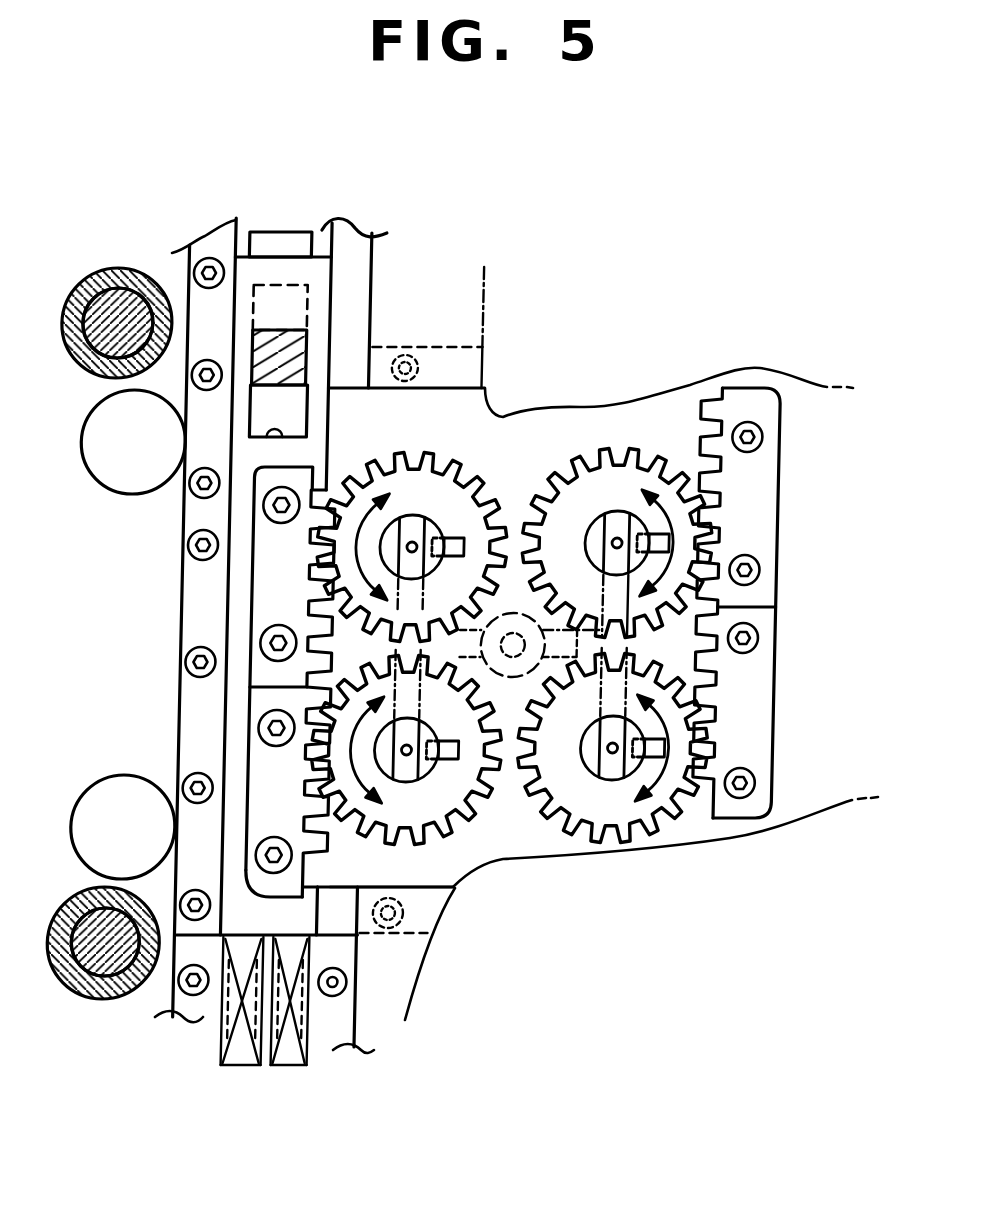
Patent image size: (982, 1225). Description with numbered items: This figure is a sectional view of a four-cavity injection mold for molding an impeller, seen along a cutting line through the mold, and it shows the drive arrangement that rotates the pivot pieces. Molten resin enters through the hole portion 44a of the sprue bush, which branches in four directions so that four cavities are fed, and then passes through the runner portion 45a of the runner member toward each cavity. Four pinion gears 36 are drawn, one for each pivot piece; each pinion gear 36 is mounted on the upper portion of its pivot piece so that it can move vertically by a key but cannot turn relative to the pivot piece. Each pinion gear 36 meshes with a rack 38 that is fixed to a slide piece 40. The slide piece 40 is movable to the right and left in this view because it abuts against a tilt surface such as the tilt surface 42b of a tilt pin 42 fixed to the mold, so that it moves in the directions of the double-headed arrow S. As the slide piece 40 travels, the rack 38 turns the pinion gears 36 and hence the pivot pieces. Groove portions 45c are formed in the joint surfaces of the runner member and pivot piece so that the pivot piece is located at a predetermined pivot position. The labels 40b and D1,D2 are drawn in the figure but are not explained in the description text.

The pinion gear 36 is at (468, 478).
The rack 38 is at (755, 482).
The slide piece 40 is at (320, 287).
The slide member engaging portion 40b is at (303, 335).
The tilt pin 42 is at (275, 350).
The tilt surface 42b is at (278, 385).
The hole portion 44a is at (513, 614).
The runner portion 45a is at (632, 600).
The groove portions 45c is at (418, 517).
The double-headed arrow S is at (287, 108).
The moving directions D1,D2 is at (318, 562).